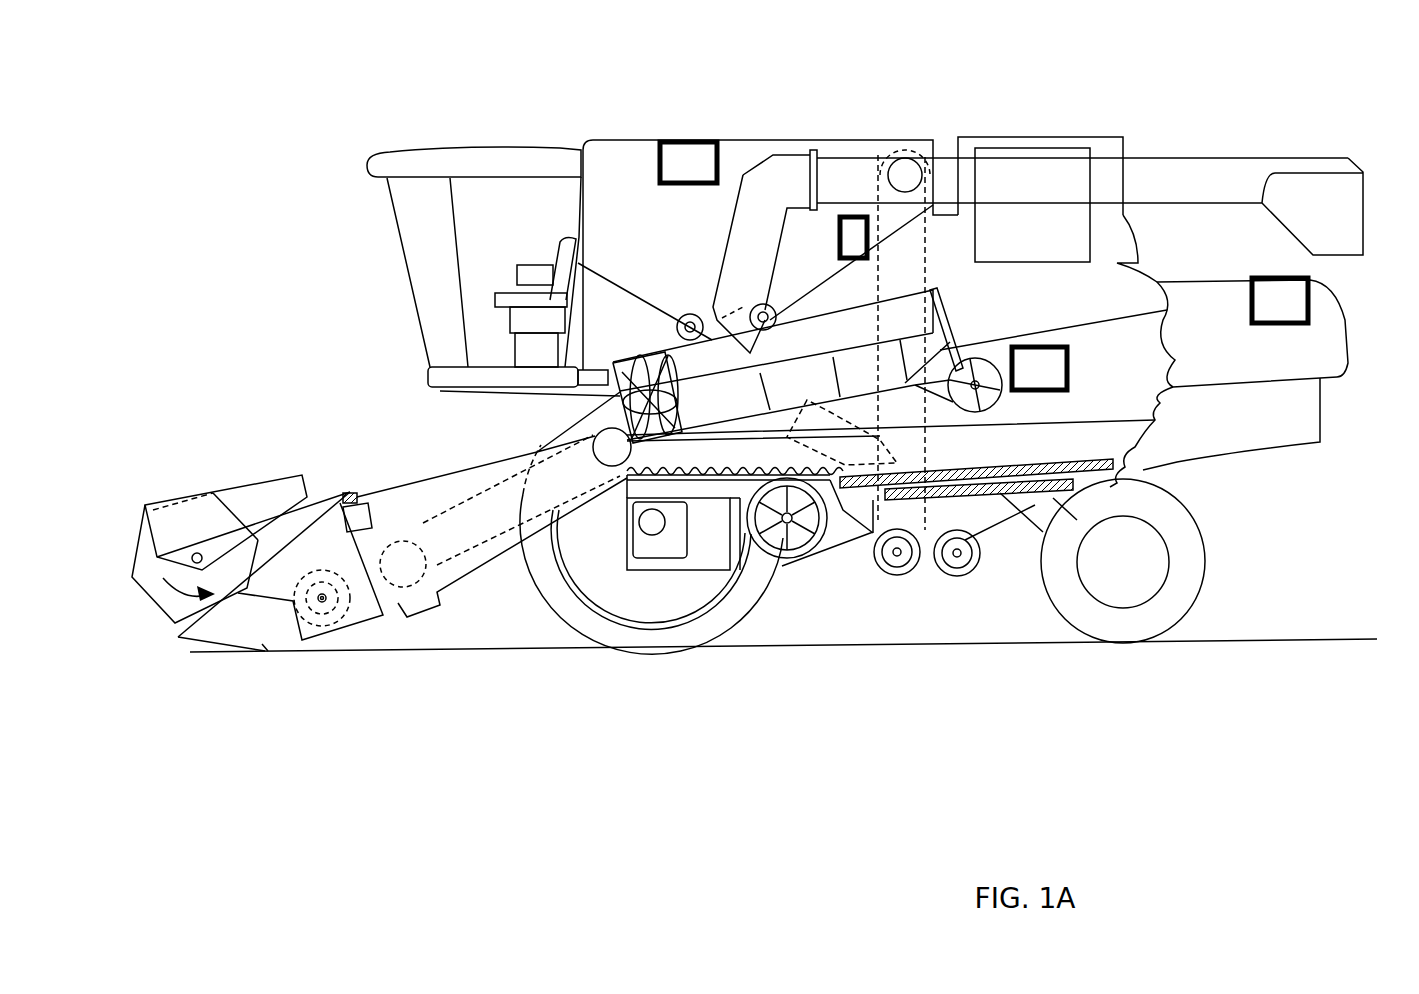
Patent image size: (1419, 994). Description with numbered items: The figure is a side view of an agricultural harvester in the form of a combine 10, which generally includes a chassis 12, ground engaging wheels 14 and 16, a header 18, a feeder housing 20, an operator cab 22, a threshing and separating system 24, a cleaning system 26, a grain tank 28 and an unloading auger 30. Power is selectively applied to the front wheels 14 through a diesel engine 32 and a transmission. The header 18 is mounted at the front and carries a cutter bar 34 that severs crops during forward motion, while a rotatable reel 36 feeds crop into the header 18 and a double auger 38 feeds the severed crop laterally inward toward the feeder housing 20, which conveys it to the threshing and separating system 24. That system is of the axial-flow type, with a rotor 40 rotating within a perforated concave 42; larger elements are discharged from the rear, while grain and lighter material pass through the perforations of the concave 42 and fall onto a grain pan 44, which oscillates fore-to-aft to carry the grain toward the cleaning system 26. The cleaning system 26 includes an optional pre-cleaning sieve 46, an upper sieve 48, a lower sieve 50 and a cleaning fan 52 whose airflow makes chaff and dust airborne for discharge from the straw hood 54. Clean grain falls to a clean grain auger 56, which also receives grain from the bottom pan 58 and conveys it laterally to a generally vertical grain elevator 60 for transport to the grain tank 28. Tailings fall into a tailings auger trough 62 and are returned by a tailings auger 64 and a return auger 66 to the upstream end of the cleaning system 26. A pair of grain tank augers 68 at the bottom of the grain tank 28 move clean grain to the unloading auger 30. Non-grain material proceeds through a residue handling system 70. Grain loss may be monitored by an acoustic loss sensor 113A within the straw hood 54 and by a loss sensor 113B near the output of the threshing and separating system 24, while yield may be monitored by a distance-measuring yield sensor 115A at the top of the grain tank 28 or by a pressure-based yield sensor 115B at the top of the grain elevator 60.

The combine 10 is at (466, 126).
The chassis 12 is at (1140, 478).
The front wheels 14 is at (560, 607).
The ground engaging wheels 16 is at (1200, 585).
The header 18 is at (229, 460).
The feeder housing 20 is at (450, 480).
The operator cab 22 is at (397, 247).
The threshing and separating system 24 is at (543, 414).
The cleaning system 26 is at (845, 588).
The grain tank 28 is at (645, 145).
The unloading auger 30 is at (1215, 158).
The diesel engine 32 is at (1020, 147).
The cutter bar 34 is at (250, 651).
The rotatable reel 36 is at (155, 540).
The double auger 38 is at (325, 627).
The rotor 40 is at (637, 352).
The perforated concave 42 is at (823, 345).
The grain pan 44 is at (618, 503).
The pre-cleaning sieve 46 is at (935, 470).
The upper sieve 48 is at (1035, 467).
The lower sieve 50 is at (1022, 500).
The cleaning fan 52 is at (792, 562).
The straw hood 54 is at (1330, 320).
The clean grain auger 56 is at (897, 576).
The bottom pan 58 is at (1057, 500).
The grain elevator 60 is at (932, 270).
The tailings auger trough 62 is at (1035, 502).
The tailings auger 64 is at (955, 578).
The return auger 66 is at (856, 342).
The grain tank augers 68 is at (688, 312).
The residue handling system 70 is at (1297, 468).
The loss sensor 113A is at (1263, 287).
The loss sensor 113B is at (1040, 353).
The yield sensor 115A is at (690, 157).
The yield sensor 115B is at (857, 213).